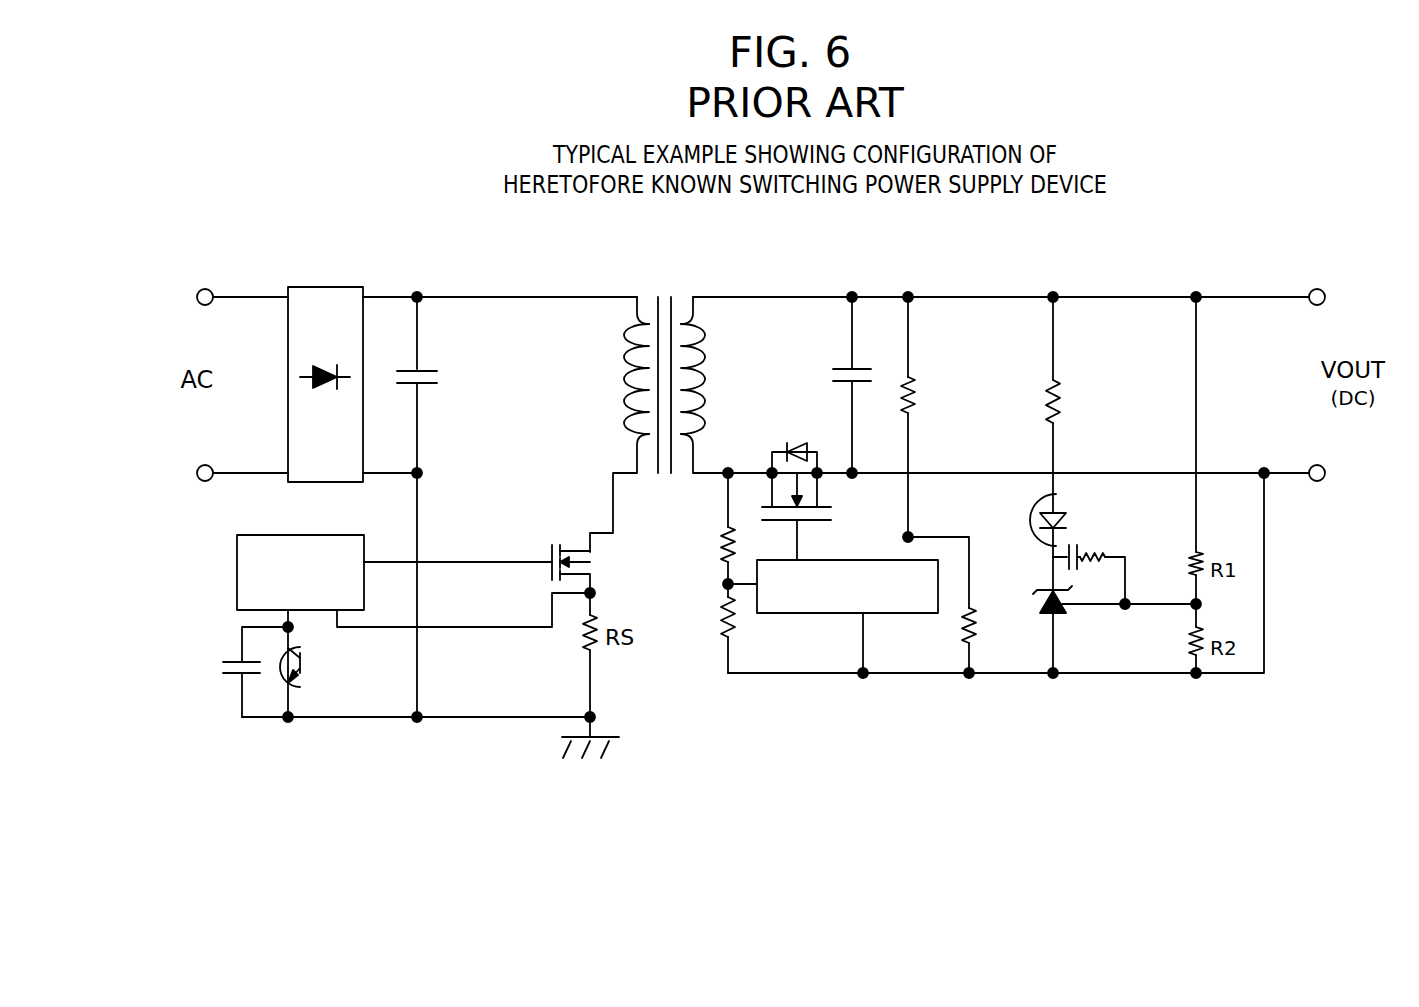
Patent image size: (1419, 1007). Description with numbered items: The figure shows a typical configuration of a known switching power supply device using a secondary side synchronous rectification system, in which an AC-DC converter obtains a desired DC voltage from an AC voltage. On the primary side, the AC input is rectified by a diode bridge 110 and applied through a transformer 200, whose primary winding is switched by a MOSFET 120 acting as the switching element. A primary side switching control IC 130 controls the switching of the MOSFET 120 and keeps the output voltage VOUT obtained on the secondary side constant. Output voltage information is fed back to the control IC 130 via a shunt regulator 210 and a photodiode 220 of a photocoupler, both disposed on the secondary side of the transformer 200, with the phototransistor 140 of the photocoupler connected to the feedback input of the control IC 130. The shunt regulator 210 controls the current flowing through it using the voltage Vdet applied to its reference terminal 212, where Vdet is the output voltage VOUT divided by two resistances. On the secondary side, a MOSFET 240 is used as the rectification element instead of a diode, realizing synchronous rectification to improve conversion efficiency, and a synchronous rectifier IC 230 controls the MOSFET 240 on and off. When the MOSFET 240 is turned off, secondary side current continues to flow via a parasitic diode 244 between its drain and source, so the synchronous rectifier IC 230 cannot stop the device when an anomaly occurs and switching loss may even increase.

The diode bridge 110 is at (323, 287).
The MOSFET 120 is at (578, 544).
The primary side switching control IC 130 is at (237, 562).
The phototransistor 140 is at (307, 668).
The transformer 200 is at (670, 292).
The shunt regulator 210 is at (1035, 609).
The reference terminal 212 is at (1090, 606).
The photodiode 220 is at (1075, 519).
The synchronous rectifier IC 230 is at (780, 616).
The MOSFET 240 is at (823, 485).
The parasitic diode 244 is at (800, 443).